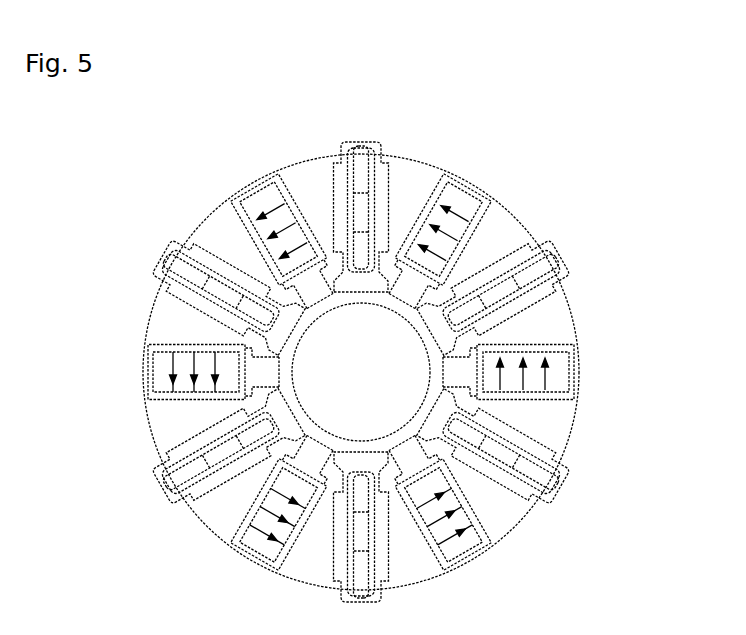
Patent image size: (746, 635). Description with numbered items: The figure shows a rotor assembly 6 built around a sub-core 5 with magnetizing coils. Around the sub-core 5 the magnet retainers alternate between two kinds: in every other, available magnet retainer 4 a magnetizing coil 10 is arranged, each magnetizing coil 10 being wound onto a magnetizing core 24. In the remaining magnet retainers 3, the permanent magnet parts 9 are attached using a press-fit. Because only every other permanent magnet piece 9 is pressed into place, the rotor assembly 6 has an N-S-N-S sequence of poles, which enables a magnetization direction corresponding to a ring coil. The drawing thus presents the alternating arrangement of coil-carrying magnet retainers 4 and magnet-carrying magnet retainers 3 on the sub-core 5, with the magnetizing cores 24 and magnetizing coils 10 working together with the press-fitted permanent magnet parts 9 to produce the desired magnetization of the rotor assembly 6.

The magnet retainer 3 is at (467, 190).
The magnet retainer 4 is at (567, 256).
The sub-core 5 is at (565, 298).
The rotor assembly 6 is at (388, 110).
The permanent magnet part 9 is at (542, 380).
The magnetizing coil 10 is at (502, 290).
The magnetizing core 24 is at (498, 292).